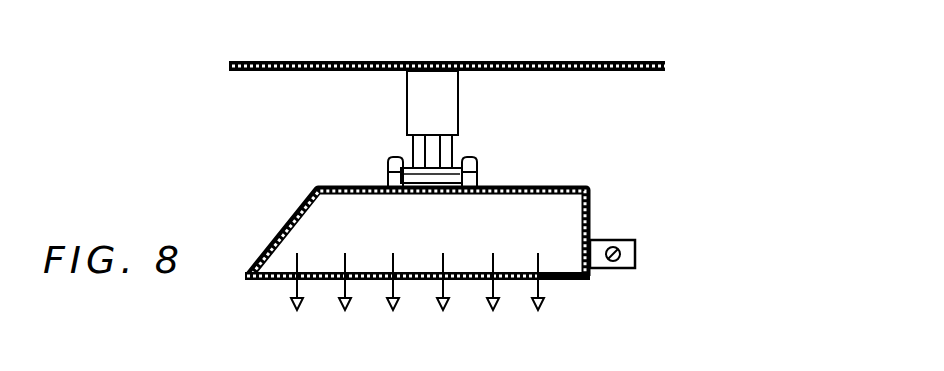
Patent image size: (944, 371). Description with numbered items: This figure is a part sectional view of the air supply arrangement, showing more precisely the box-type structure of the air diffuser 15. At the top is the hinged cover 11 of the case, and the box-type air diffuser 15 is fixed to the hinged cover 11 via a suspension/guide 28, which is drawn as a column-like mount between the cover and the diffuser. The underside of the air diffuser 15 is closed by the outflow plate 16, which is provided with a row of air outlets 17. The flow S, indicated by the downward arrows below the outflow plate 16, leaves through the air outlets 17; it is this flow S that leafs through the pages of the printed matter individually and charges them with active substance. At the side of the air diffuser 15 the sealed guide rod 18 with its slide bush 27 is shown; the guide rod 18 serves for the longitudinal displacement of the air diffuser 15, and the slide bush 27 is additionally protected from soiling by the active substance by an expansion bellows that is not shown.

The hinged cover 11 is at (320, 72).
The suspension/guide 28 is at (478, 140).
The box-type air diffuser 15 is at (292, 205).
The air outlets 17 is at (305, 253).
The outflow plate 16 is at (566, 274).
The slide bush 27 is at (635, 253).
The sealed guide rod 18 is at (610, 247).
The flow S is at (417, 299).